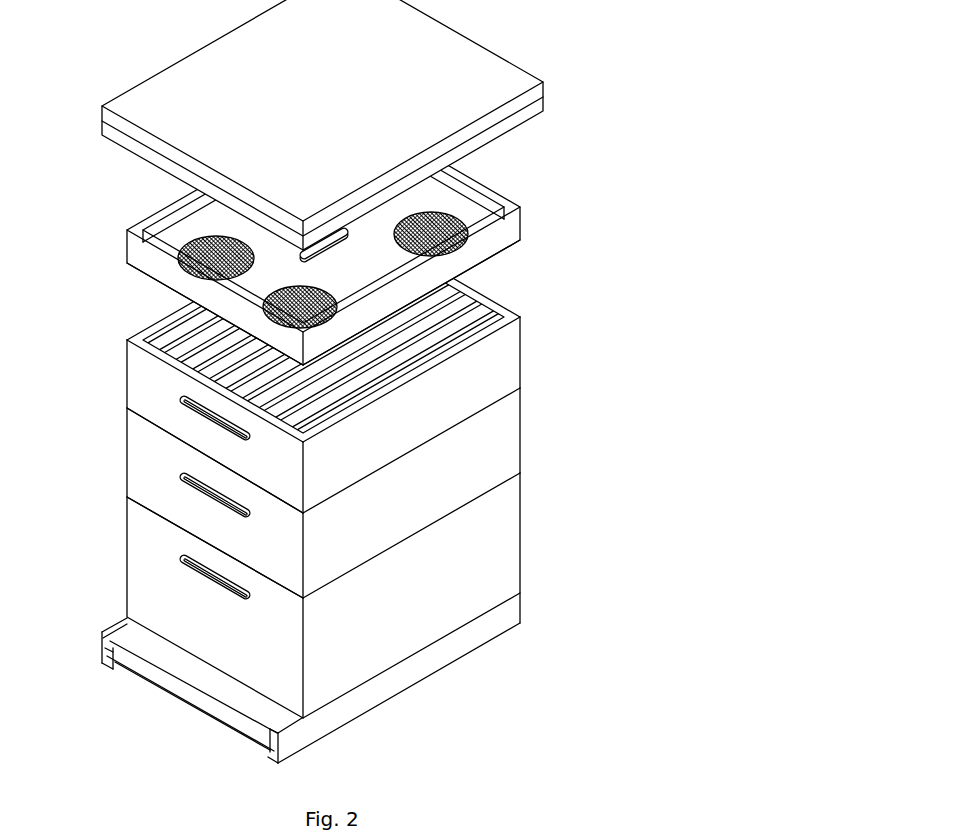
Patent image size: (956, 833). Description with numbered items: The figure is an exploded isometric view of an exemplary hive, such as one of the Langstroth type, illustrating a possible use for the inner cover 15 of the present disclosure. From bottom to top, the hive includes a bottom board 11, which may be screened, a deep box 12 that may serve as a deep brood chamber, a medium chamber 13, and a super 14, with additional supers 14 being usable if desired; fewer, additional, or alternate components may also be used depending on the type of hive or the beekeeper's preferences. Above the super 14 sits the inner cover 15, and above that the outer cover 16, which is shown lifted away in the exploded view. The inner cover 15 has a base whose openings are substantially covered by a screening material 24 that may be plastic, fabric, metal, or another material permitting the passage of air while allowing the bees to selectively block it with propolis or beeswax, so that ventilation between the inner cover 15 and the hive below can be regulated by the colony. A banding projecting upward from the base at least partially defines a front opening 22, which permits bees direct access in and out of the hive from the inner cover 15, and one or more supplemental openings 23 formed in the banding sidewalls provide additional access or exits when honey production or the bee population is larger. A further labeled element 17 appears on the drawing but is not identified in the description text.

The bottom board 11 is at (483, 630).
The deep box 12 is at (487, 560).
The medium chamber 13 is at (500, 442).
The super 14 is at (485, 370).
The inner cover 15 is at (405, 231).
The outer cover 16 is at (438, 67).
The slats 17 is at (473, 295).
The front opening 22 is at (155, 323).
The supplemental openings 23 is at (520, 242).
The screening material 24 is at (447, 207).